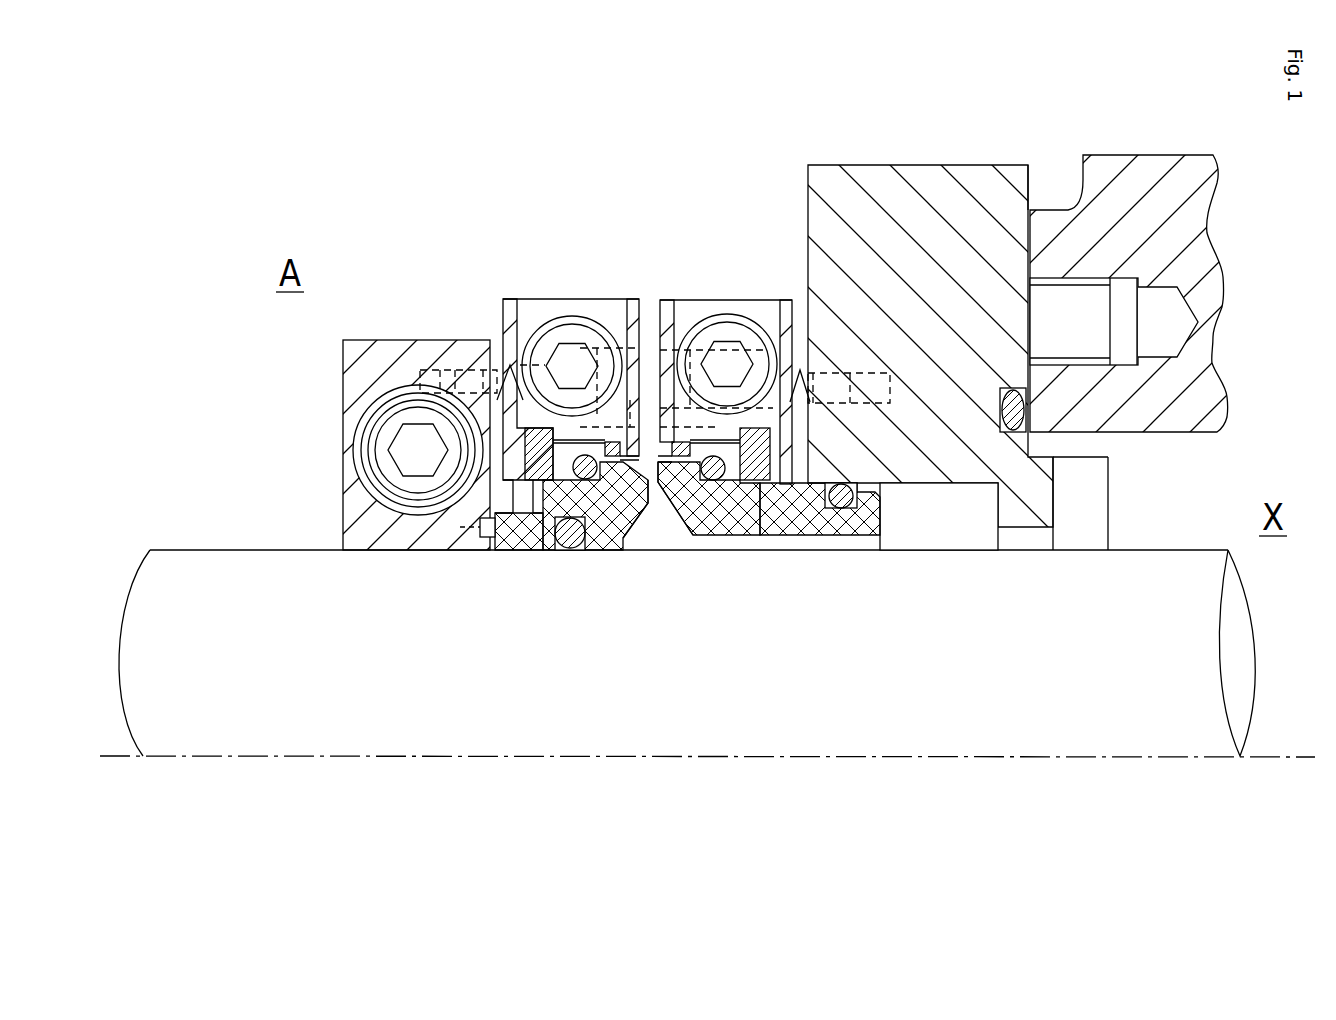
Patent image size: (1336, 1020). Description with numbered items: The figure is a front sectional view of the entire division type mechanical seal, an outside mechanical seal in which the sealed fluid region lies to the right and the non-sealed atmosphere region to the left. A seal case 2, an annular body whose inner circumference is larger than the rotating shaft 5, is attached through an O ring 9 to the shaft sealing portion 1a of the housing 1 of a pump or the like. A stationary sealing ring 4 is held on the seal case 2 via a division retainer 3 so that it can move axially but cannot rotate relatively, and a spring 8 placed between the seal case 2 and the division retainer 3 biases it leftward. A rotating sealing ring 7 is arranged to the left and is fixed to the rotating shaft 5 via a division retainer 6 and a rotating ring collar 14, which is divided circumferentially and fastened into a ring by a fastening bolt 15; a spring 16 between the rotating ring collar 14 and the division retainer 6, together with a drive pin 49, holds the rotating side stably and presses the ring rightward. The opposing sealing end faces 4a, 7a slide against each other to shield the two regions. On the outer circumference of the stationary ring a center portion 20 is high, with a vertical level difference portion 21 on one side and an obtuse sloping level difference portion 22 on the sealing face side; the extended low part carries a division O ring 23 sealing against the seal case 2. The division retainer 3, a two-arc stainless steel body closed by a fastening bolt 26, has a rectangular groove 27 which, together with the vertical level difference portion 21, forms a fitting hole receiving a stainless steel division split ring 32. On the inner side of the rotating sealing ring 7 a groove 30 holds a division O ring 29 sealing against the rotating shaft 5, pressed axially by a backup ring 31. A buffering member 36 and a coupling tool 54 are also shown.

The housing 1 is at (1180, 163).
The shaft sealing portion 1a is at (1030, 238).
The seal case 2 is at (1000, 235).
The division retainer 3 is at (710, 300).
The stationary sealing ring 4 is at (748, 522).
The sealing end face 4a is at (664, 478).
The rotating shaft 5 is at (272, 748).
The division retainer 6 is at (570, 298).
The rotating sealing ring 7 is at (620, 518).
The sealing end face 7a is at (652, 492).
The spring 8 is at (800, 372).
The O ring 9 is at (1018, 412).
The rotating ring collar 14 is at (343, 483).
The fastening bolt 15 is at (387, 430).
The spring 16 is at (510, 362).
The center portion in width direction of divided sealing ring 20 is at (652, 330).
The vertical level difference portion of divided sealing ring 21 is at (553, 525).
The sloping level difference portion of divided sealing ring 22 is at (628, 346).
The division O ring 23 is at (882, 520).
The fastening bolt 26 is at (752, 335).
The rectangular groove of division retainer 27 is at (523, 440).
The division O ring 29 is at (572, 548).
The groove 30 is at (572, 550).
The backup ring 31 is at (505, 548).
The division split ring 32 is at (462, 530).
The buffering member 36 is at (700, 468).
The drive pin 49 is at (460, 412).
The coupling tool 54 is at (588, 480).